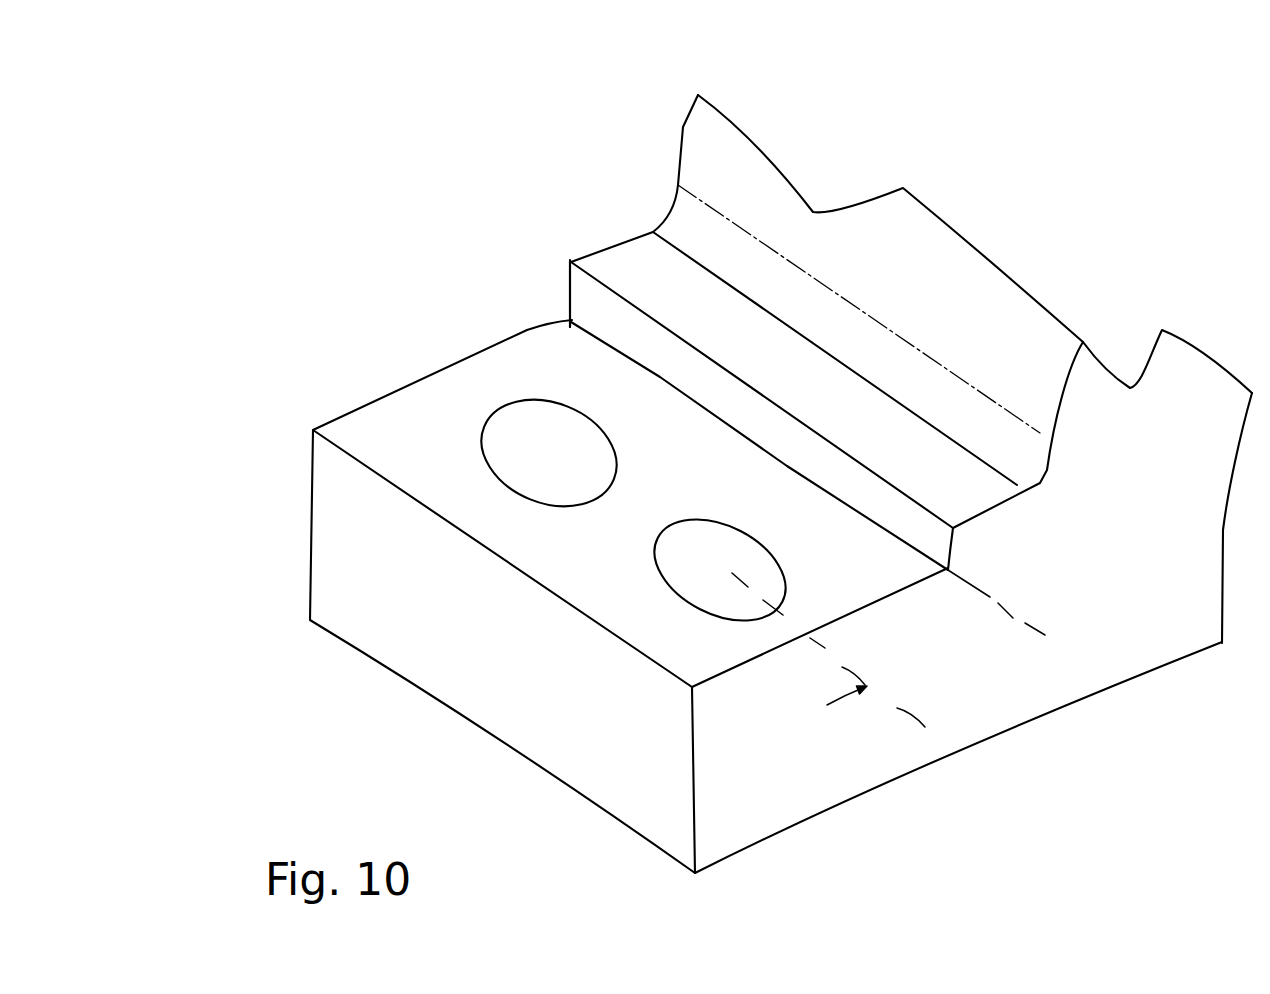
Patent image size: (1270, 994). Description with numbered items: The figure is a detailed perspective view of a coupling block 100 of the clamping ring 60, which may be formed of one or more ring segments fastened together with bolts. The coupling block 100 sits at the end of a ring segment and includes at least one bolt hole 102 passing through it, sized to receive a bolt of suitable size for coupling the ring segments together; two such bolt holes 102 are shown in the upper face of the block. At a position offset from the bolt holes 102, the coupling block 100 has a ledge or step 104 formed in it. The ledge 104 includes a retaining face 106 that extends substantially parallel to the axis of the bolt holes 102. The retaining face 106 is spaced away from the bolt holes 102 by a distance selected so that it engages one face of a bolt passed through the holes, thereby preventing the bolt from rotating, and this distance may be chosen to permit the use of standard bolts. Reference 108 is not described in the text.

The clamping ring 60 is at (683, 127).
The coupling block 100 is at (415, 380).
The bolt hole 102 is at (683, 592).
The ledge or step 104 is at (620, 240).
The retaining face 106 is at (602, 313).
The path 108 is at (1055, 585).